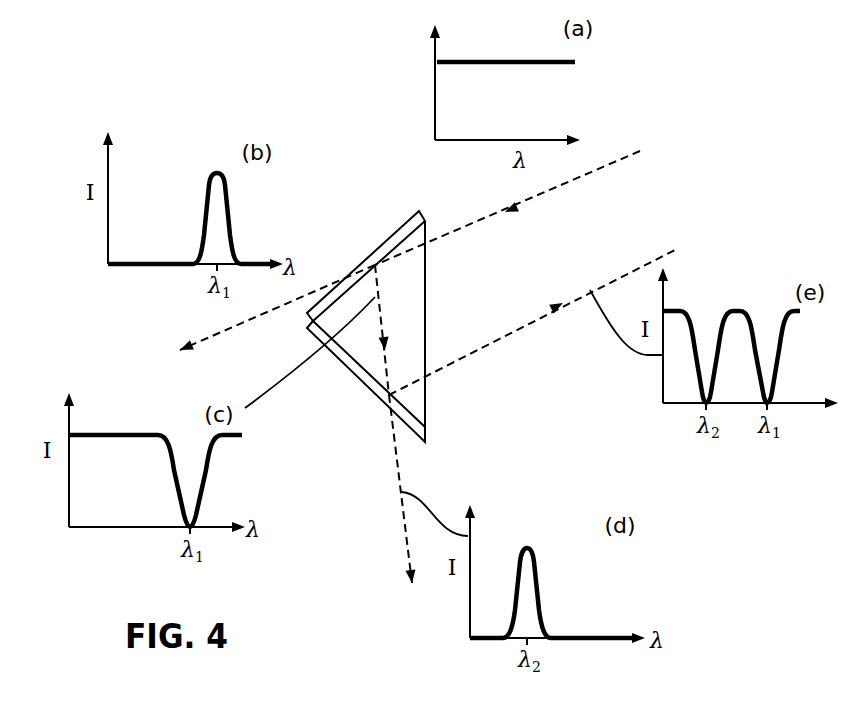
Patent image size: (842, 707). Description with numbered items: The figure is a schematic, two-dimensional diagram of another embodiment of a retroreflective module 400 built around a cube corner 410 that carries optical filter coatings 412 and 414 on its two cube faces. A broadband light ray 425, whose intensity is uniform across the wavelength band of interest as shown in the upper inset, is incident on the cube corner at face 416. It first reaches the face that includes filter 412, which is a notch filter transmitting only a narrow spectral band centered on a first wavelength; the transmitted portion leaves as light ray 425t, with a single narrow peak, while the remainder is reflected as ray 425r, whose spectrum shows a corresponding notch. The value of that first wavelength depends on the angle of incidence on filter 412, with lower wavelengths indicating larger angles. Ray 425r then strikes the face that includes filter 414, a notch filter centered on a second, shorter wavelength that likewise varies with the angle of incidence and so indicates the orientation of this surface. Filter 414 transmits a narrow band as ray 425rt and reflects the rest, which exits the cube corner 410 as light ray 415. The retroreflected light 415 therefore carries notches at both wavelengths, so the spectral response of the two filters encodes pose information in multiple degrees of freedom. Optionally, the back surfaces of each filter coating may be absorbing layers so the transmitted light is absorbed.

The optical filtering system 400 is at (205, 55).
The cube corner 410 is at (402, 184).
The optical filter coating 412 is at (377, 258).
The optical filter coating 414 is at (367, 382).
The face 416 is at (427, 392).
The light ray 425 is at (531, 199).
The light ray 425t is at (207, 338).
The ray 425r is at (380, 329).
The ray 425rt is at (405, 541).
The light ray 415 is at (556, 312).